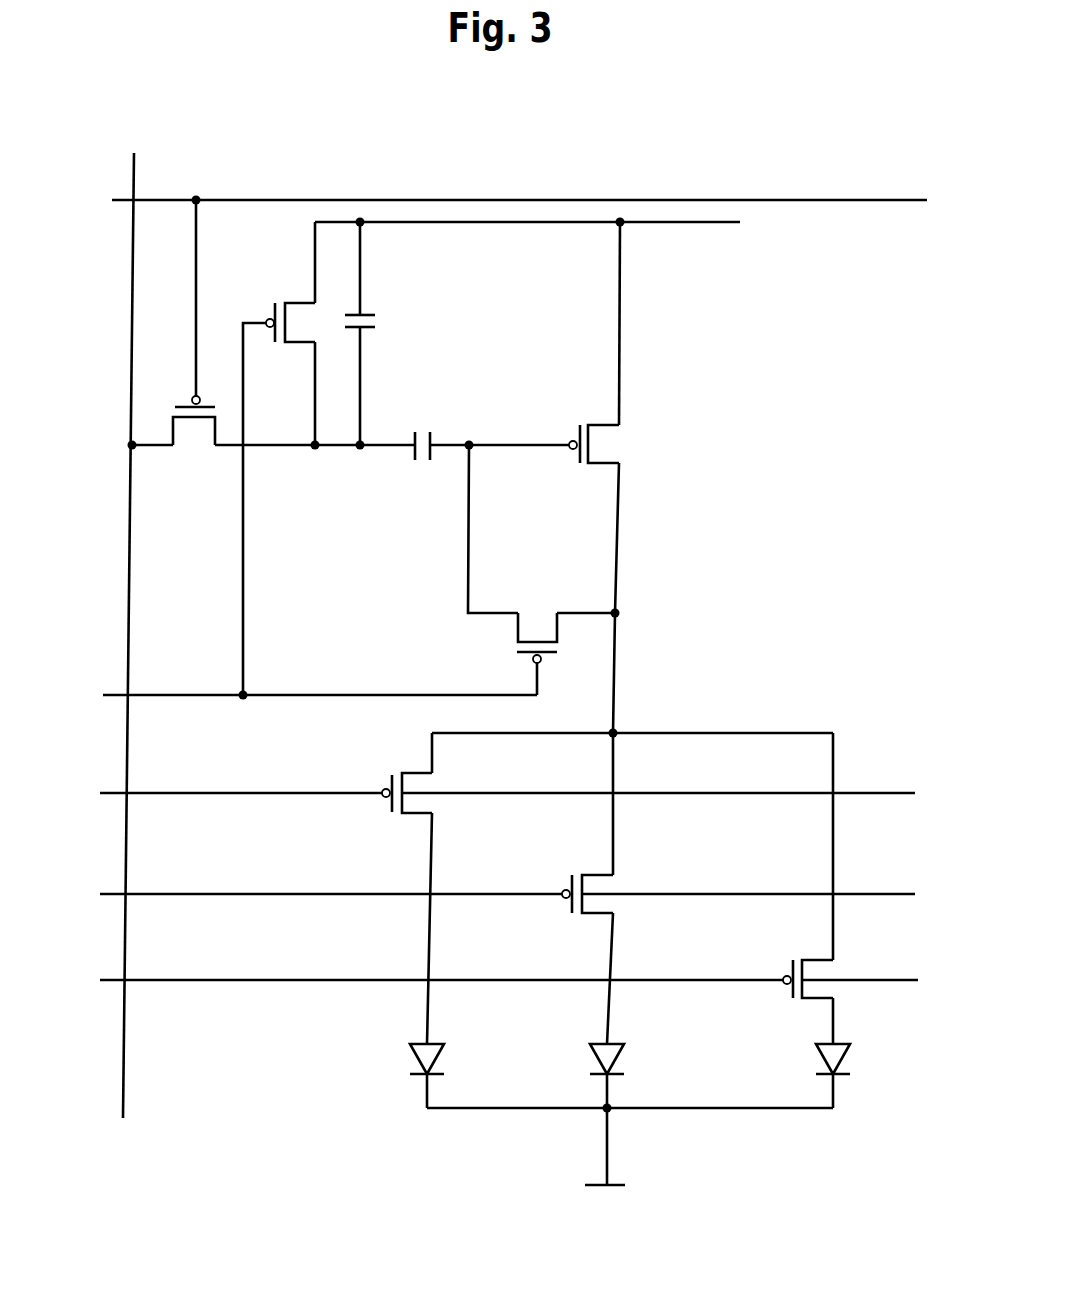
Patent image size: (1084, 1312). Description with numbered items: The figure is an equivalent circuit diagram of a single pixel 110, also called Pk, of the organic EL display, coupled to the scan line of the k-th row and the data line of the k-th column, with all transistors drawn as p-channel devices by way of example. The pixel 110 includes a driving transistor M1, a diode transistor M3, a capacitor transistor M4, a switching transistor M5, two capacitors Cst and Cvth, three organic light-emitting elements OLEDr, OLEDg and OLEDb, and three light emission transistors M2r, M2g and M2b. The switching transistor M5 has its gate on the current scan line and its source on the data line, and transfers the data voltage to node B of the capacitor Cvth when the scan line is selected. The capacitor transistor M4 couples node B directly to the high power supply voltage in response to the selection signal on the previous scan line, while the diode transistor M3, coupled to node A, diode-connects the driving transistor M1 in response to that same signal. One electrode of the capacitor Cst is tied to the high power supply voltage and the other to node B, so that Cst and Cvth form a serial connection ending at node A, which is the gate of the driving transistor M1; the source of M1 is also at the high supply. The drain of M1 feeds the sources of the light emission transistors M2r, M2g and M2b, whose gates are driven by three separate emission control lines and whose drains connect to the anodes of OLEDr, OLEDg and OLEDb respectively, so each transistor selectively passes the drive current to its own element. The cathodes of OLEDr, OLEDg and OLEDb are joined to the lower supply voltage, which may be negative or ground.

The pixel 110 is at (808, 142).
The driving transistor M1 is at (609, 444).
The light emission transistor M2r is at (430, 785).
The light emission transistor M2g is at (610, 886).
The light emission transistor M2b is at (830, 971).
The diode transistor M3 is at (537, 636).
The capacitor transistor M4 is at (290, 304).
The switching transistor M5 is at (194, 438).
The capacitor Cst is at (382, 325).
The capacitor Cvth is at (422, 431).
The organic light-emitting element OLEDr is at (465, 1076).
The organic light-emitting element OLEDg is at (646, 1076).
The organic light-emitting element OLEDb is at (870, 1076).